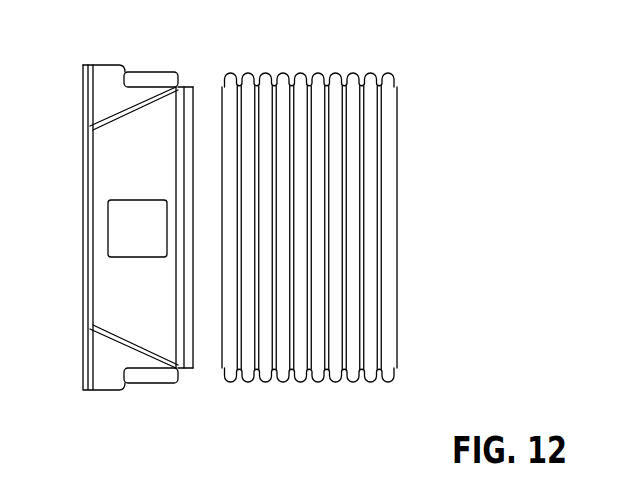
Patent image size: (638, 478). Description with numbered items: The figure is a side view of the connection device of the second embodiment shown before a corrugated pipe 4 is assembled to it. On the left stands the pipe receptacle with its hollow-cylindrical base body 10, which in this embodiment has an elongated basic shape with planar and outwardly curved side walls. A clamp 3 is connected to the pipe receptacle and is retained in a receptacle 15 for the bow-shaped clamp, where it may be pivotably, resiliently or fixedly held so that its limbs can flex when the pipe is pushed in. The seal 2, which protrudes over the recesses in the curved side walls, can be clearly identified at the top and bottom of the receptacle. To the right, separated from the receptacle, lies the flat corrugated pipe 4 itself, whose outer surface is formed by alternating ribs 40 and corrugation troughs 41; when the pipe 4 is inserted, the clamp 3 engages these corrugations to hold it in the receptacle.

The seal 2 is at (153, 80).
The clamp 3 is at (108, 228).
The corrugated pipe 4 is at (324, 194).
The base body 10 is at (108, 72).
The receptacle for the bow-shaped clamp 15 is at (93, 170).
The ribs 40 is at (246, 76).
The corrugation troughs 41 is at (291, 86).